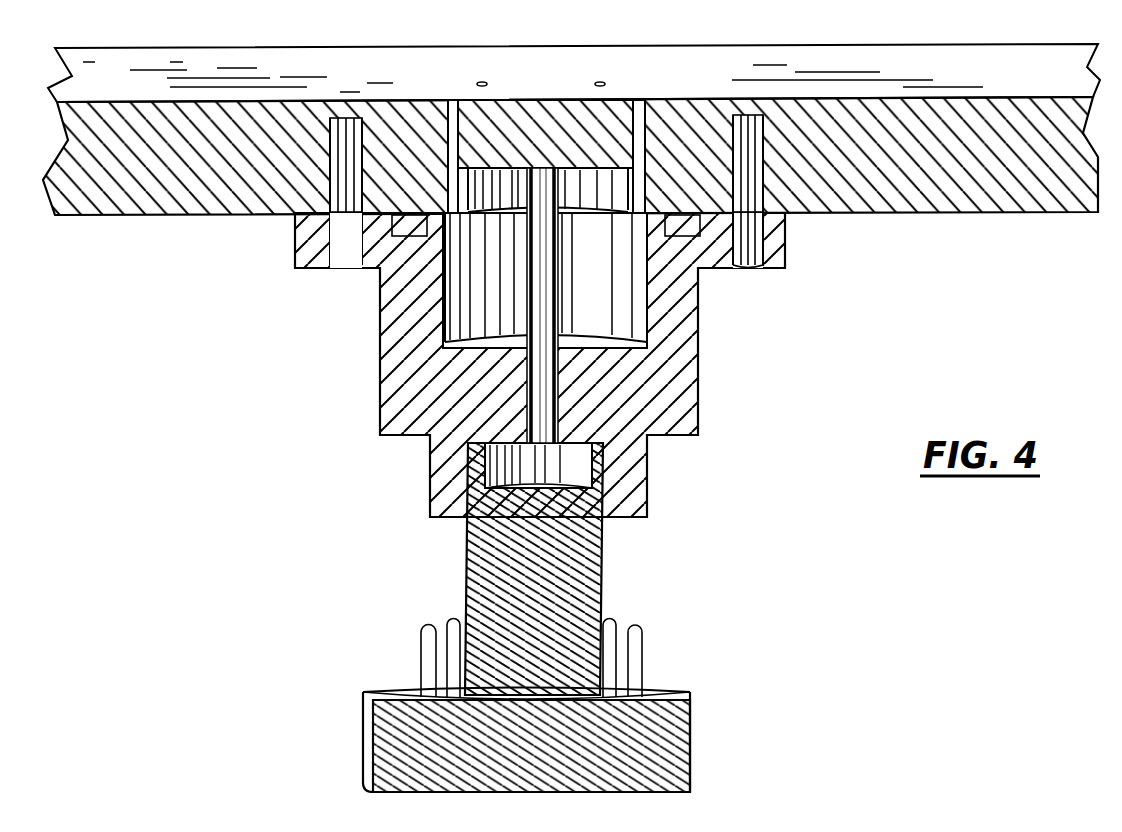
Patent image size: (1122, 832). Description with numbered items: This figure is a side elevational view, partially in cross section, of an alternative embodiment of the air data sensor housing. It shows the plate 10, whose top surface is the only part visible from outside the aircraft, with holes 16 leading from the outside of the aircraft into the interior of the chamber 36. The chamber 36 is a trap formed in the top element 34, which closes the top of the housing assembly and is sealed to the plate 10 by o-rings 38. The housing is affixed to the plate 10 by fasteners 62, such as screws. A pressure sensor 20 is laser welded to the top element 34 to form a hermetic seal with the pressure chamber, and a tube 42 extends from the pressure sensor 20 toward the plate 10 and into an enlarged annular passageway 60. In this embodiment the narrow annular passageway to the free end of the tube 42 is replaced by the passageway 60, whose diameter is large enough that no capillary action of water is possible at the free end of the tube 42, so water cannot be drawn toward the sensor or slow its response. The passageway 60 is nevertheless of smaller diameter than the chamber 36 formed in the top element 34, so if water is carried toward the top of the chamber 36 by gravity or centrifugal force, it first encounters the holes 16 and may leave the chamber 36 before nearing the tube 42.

The plate 10 is at (233, 62).
The holes 16 is at (447, 130).
The annular passageway 60 is at (590, 187).
The o-rings 38 is at (677, 213).
The tube 42 is at (543, 275).
The fasteners 62 is at (745, 267).
The chamber 36 is at (622, 320).
The top element 34 is at (687, 422).
The pressure sensor 20 is at (672, 688).